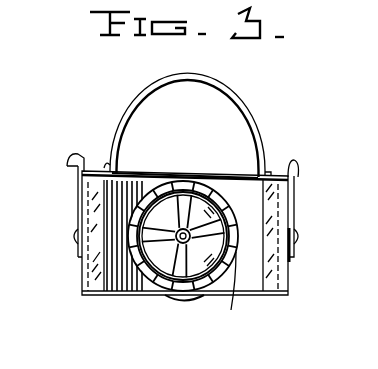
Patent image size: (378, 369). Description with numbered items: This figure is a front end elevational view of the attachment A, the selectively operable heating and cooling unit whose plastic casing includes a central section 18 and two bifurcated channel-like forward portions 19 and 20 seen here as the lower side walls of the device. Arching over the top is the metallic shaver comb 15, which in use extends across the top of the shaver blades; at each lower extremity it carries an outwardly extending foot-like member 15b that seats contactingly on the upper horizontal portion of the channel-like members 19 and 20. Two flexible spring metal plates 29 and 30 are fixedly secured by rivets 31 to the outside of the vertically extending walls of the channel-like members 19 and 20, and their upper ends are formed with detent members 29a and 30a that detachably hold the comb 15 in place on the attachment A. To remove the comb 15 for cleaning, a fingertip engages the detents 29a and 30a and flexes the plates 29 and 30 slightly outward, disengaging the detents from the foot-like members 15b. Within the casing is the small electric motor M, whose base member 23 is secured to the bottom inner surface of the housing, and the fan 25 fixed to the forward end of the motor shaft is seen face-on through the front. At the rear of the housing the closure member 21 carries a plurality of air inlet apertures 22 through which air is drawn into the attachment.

The attachment A is at (25, 103).
The shaver comb 15 is at (253, 117).
The foot-like member 15b is at (276, 140).
The central section 18 is at (246, 200).
The bifurcated channel-like forward portion 19 is at (80, 275).
The bifurcated channel-like forward portion 20 is at (289, 287).
The closure member 21 is at (140, 253).
The air inlet apertures 22 is at (240, 242).
The base member 23 is at (174, 297).
The fan 25 is at (194, 181).
The flexible spring metal plate 29 is at (78, 200).
The detent member 29a is at (78, 160).
The flexible spring metal plate 30 is at (292, 200).
The detent member 30a is at (292, 164).
The rivets 31 is at (72, 238).
The electric motor M is at (166, 171).